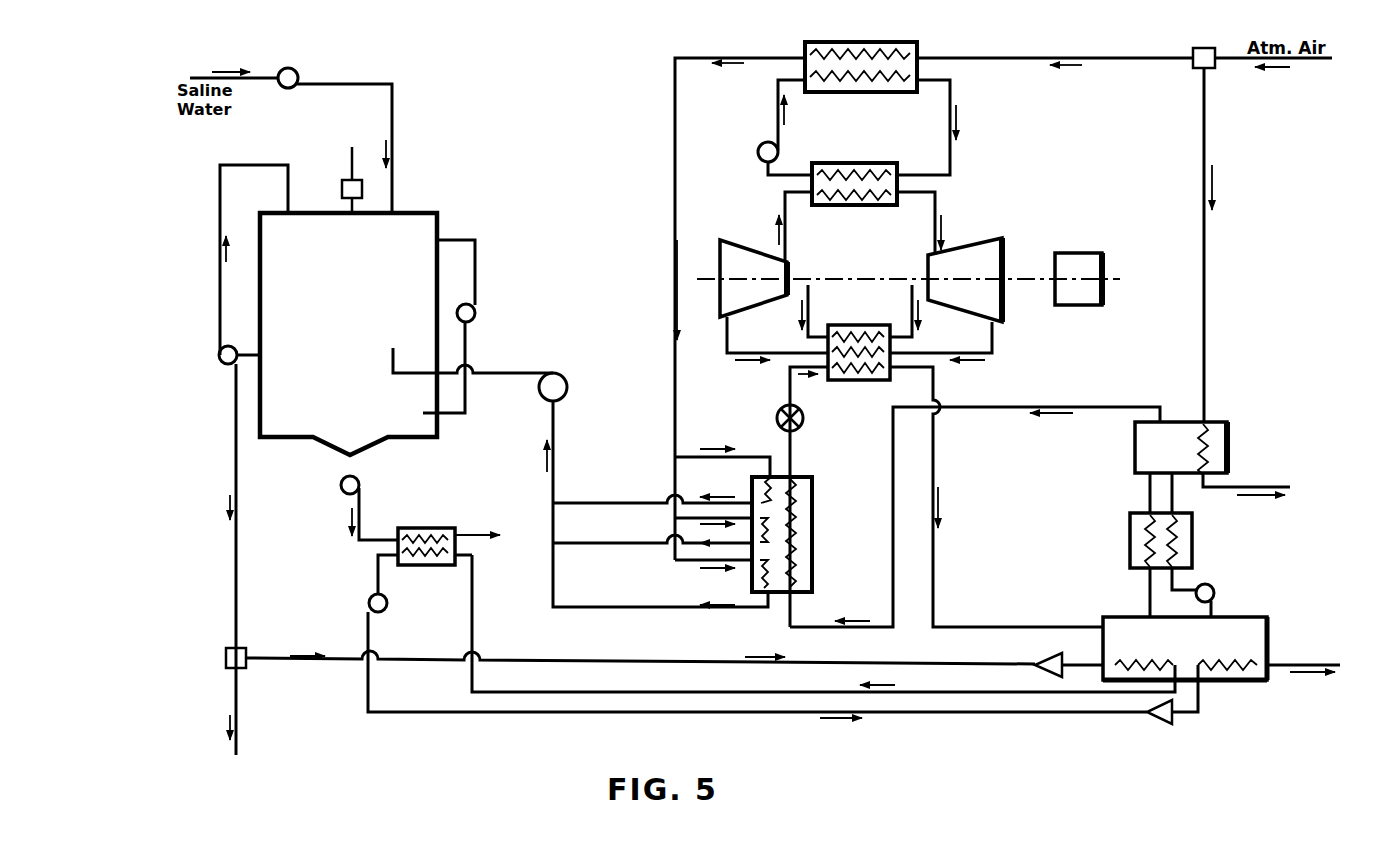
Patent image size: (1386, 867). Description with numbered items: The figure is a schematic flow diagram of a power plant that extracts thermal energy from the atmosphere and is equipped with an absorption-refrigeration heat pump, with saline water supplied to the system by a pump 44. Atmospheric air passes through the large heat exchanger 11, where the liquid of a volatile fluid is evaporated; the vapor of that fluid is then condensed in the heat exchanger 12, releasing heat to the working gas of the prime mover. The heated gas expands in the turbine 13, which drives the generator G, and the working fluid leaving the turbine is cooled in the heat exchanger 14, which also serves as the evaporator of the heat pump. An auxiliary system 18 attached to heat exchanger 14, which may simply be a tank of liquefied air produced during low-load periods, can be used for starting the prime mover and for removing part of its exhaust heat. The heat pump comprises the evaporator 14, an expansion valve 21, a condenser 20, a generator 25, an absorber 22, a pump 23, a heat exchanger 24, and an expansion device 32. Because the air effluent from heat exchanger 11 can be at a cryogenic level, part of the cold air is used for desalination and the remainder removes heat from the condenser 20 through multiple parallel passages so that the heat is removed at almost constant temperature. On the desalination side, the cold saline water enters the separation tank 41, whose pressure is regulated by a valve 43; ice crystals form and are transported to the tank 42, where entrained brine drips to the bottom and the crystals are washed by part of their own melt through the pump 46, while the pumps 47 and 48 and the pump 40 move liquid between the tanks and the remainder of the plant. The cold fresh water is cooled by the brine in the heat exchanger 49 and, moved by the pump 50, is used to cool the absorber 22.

The heat exchanger 11 is at (840, 38).
The heat exchanger 12 is at (823, 161).
The turbine 13 is at (963, 243).
The heat exchanger 14 is at (872, 387).
The auxiliary system 18 is at (889, 303).
The condenser 20 is at (812, 532).
The expansion valve 21 is at (800, 429).
The absorber 22 is at (1129, 616).
The pump 23 is at (1215, 590).
The heat exchanger 24 is at (1194, 550).
The generator 25 is at (1226, 443).
The expansion device 32 is at (1051, 659).
The pump 40 is at (568, 386).
The separation tank 41 is at (435, 276).
The tank 42 is at (262, 295).
The valve 43 is at (342, 184).
The pump 44 is at (292, 69).
The pump 46 is at (223, 369).
The pump 47 is at (341, 485).
The pump 48 is at (475, 318).
The heat exchanger 49 is at (408, 528).
The pump 50 is at (369, 600).
The generator G is at (1070, 253).